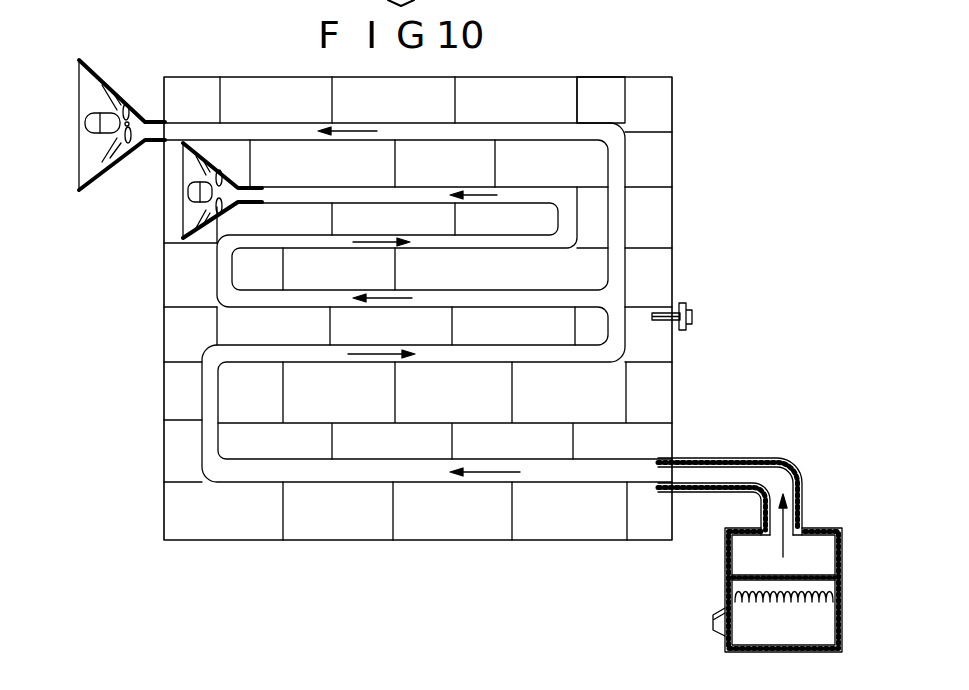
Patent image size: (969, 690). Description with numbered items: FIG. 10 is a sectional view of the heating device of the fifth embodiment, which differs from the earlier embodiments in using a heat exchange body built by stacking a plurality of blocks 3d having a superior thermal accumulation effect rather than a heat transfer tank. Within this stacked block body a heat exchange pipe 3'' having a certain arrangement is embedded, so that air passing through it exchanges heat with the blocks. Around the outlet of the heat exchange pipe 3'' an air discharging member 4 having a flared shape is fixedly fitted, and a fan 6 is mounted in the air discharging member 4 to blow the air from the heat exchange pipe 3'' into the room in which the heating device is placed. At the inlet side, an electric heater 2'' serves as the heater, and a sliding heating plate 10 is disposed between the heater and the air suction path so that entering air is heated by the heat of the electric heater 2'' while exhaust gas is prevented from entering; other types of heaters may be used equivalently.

The electric heater 2'' is at (799, 326).
The heat exchange pipe 3'' is at (466, 308).
The block 3d is at (663, 116).
The air discharging member 4 is at (108, 161).
The fan 6 is at (80, 123).
The heating plate 10 is at (748, 573).